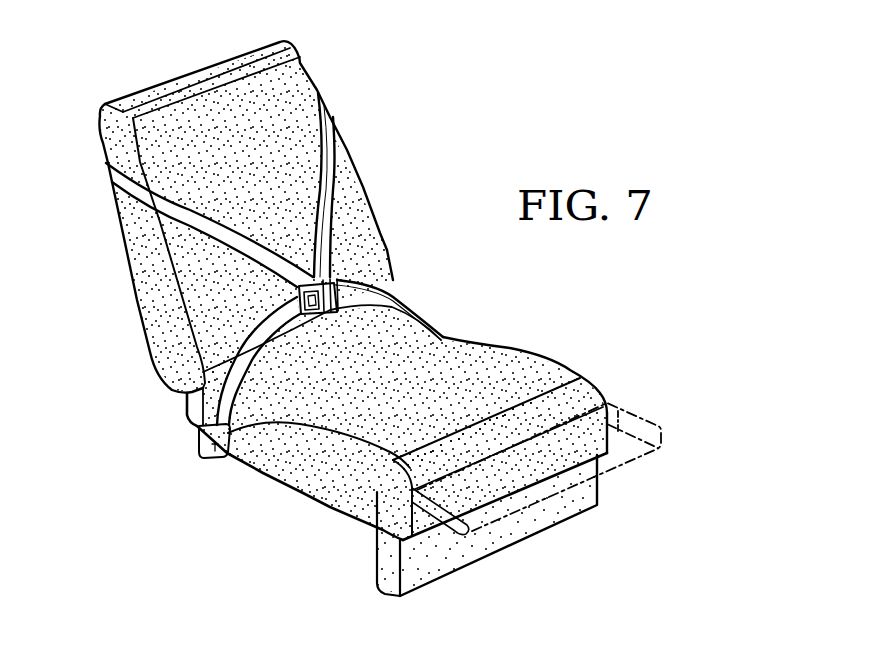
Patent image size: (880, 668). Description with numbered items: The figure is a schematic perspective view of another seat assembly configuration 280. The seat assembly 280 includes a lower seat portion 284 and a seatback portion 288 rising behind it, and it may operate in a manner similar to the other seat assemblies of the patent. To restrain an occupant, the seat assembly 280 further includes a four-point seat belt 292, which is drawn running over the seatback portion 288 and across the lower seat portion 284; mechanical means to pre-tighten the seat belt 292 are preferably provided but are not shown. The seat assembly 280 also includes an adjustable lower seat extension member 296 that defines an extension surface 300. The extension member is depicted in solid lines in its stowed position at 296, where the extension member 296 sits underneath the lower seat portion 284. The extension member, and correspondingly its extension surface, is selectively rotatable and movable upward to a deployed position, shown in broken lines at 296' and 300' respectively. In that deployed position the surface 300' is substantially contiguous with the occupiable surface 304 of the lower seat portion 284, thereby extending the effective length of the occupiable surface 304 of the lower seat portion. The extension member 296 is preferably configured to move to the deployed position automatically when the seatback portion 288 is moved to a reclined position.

The seat assembly 280 is at (456, 141).
The lower seat portion 284 is at (490, 350).
The seatback portion 288 is at (190, 73).
The four-point seat belt 292 is at (320, 97).
The adjustable lower seat extension member 296 is at (340, 544).
The extension surface 300 is at (498, 550).
The occupiable surface 304 is at (447, 361).
The extension surface in deployed position 300' is at (573, 425).
The extension member in deployed position 296' is at (682, 396).